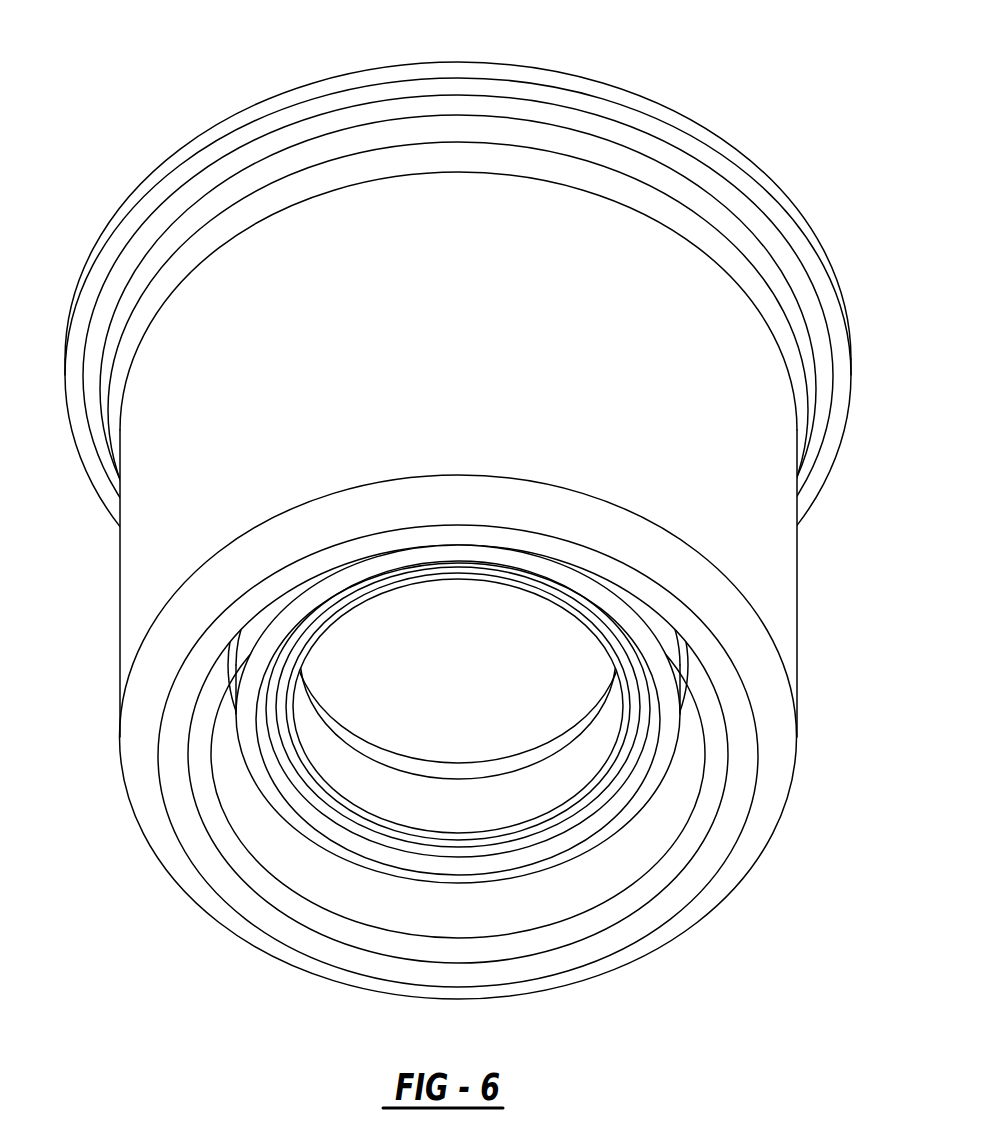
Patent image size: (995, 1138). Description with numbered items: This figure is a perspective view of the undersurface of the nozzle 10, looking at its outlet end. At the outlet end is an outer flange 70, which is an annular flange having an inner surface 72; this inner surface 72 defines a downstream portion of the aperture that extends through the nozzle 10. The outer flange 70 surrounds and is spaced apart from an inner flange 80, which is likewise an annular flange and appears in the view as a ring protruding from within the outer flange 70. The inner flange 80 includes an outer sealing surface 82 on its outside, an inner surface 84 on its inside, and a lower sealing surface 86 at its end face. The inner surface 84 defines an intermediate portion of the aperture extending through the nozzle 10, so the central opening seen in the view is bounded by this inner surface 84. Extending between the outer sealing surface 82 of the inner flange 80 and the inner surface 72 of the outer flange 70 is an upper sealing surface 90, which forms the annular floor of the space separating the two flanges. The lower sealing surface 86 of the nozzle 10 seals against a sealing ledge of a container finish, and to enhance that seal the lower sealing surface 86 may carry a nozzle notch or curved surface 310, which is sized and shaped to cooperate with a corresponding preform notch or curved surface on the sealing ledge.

The nozzle 10 is at (151, 59).
The outer flange 70 is at (172, 733).
The inner surface 72 is at (387, 905).
The inner flange 80 is at (283, 795).
The outer sealing surface 82 is at (675, 645).
The inner surface 84 is at (543, 790).
The lower sealing surface 86 is at (333, 835).
The upper sealing surface 90 is at (220, 710).
The nozzle notch or curved surface 310 is at (273, 688).